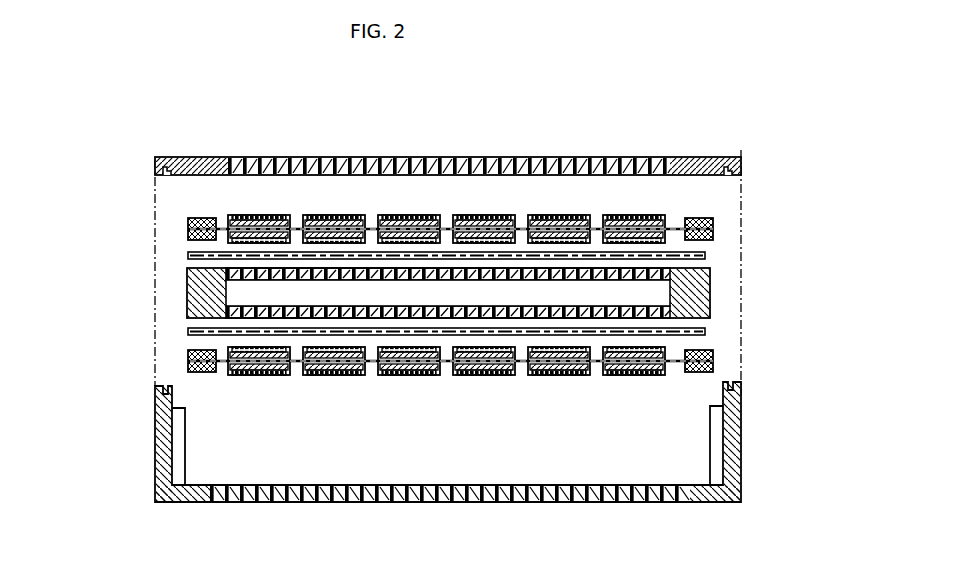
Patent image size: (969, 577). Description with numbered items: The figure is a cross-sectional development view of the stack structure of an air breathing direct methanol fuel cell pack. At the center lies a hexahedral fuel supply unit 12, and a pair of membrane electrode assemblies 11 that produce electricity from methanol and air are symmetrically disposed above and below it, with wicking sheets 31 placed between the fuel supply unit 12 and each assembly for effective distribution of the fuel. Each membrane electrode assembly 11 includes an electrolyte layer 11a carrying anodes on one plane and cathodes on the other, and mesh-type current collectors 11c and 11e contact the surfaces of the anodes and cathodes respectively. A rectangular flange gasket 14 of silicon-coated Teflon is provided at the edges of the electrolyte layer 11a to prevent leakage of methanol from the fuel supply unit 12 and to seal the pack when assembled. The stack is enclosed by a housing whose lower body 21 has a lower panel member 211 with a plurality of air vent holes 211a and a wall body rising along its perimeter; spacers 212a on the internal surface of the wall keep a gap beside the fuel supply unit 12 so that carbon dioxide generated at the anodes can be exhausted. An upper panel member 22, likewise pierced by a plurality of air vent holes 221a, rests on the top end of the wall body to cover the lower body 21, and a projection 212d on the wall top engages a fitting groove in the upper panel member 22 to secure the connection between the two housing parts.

The membrane electrode assembly 11 is at (480, 283).
The electrolyte layer 11a is at (712, 229).
The mesh-type current collector 11c is at (682, 214).
The mesh-type current collector 11e is at (682, 243).
The fuel supply unit 12 is at (716, 288).
The flange gasket 14 is at (188, 222).
The lower body 21 is at (459, 443).
The lower panel member 211 is at (424, 520).
The air vent holes 211a is at (213, 503).
The spacers 212a is at (185, 452).
The projection 212d is at (165, 388).
The upper panel member 22 is at (448, 135).
The air vent holes 221a is at (506, 157).
The wicking sheet 31 is at (188, 330).